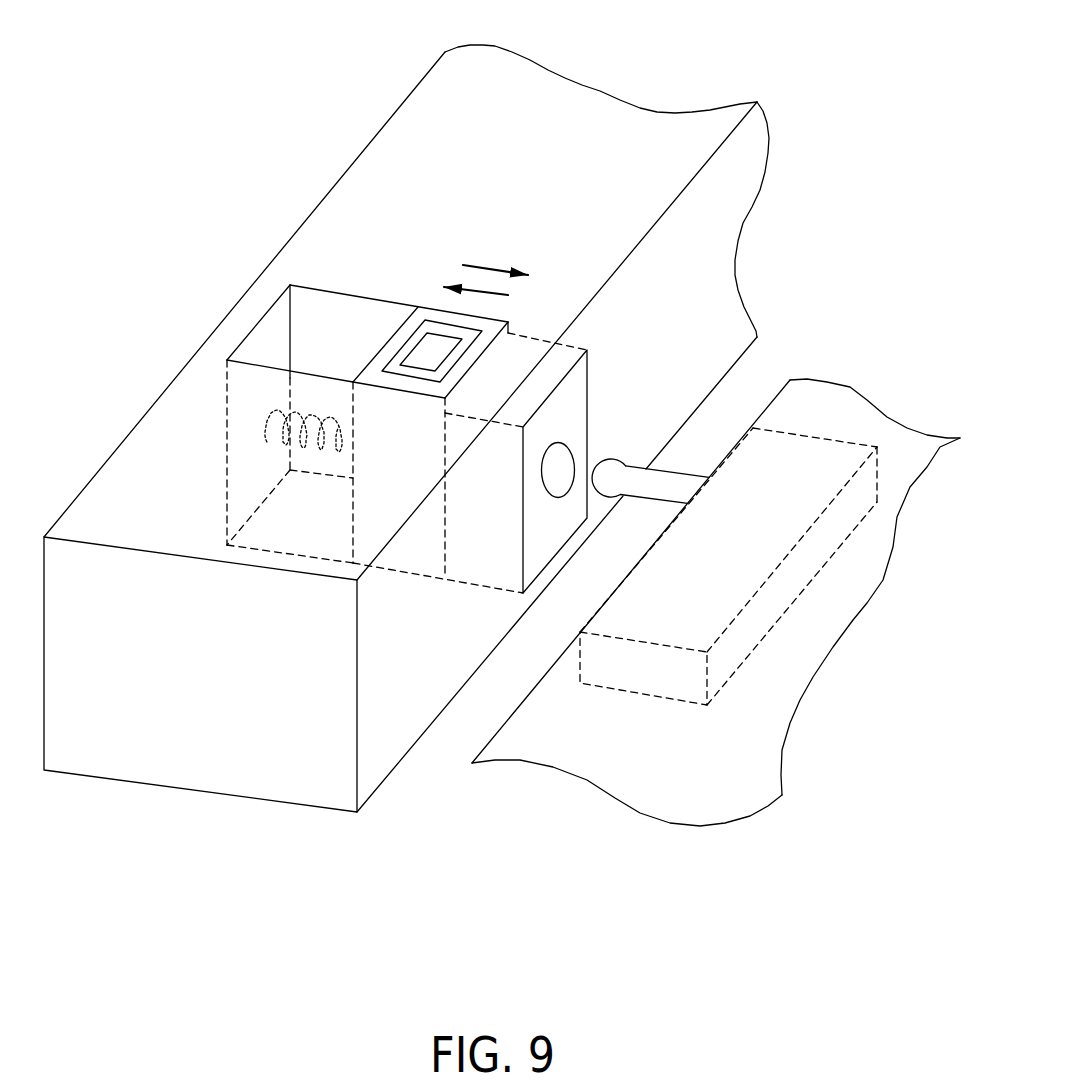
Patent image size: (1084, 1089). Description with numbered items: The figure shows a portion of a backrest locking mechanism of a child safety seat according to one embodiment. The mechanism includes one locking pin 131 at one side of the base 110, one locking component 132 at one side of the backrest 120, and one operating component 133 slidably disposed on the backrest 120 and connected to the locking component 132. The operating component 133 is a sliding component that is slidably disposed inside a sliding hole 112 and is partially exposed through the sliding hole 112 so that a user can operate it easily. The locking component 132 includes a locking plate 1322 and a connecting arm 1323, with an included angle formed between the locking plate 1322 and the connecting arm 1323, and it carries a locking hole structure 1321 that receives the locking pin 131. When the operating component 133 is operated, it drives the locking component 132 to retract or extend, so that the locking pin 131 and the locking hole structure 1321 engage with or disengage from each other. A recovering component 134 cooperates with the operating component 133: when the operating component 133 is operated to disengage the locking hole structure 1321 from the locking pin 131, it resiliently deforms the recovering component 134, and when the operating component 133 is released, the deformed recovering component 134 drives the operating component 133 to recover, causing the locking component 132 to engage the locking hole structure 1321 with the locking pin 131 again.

The base 110 is at (870, 422).
The sliding hole 112 is at (284, 322).
The backrest 120 is at (390, 167).
The locking pin 131 is at (660, 483).
The locking component 132 is at (601, 437).
The locking hole structure 1321 is at (565, 462).
The locking plate 1322 is at (560, 410).
The connecting arm 1323 is at (477, 585).
The operating component 133 is at (438, 327).
The recovering component 134 is at (307, 416).